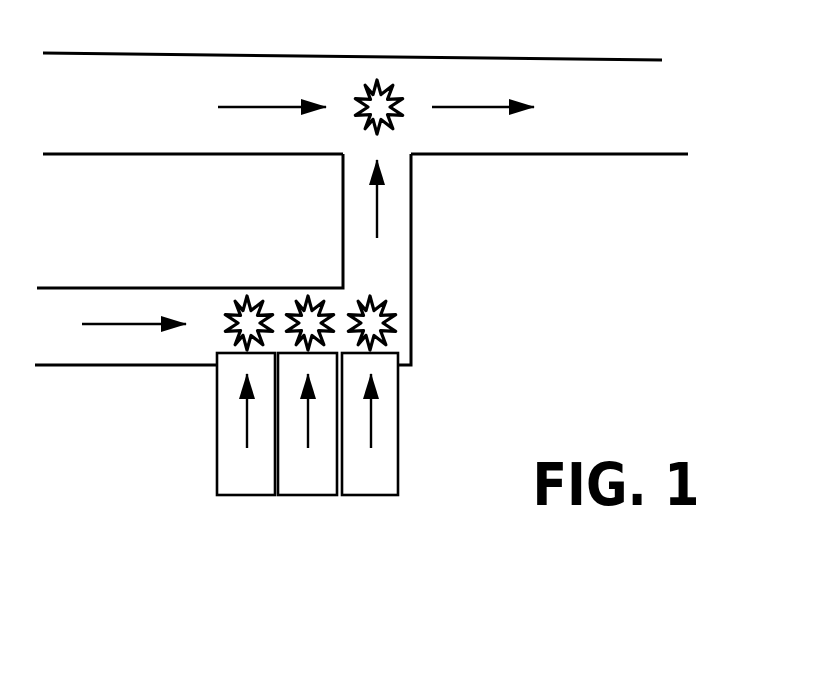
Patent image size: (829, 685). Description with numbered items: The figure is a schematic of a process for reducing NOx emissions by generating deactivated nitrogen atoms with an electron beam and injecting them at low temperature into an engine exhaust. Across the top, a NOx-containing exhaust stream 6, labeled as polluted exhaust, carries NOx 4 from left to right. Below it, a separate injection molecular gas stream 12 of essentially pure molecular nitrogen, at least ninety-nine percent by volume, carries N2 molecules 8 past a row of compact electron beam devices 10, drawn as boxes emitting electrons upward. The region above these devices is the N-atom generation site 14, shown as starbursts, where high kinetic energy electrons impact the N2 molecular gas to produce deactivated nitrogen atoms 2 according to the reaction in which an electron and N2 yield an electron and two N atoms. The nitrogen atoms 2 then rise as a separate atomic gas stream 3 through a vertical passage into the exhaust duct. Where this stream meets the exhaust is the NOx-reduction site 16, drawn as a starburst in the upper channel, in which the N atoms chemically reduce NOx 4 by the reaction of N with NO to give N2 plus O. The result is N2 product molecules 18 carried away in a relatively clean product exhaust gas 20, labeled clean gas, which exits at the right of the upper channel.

The deactivated nitrogen atoms 2 is at (390, 250).
The separate atomic gas stream 3 is at (382, 210).
The NOx 4 is at (183, 97).
The NOx-containing exhaust stream 6 is at (80, 82).
The N2 molecules 8 is at (57, 315).
The compact electron beam devices 10 is at (383, 457).
The separate injection molecular gas stream 12 is at (140, 323).
The N-atom generation site 14 is at (303, 296).
The NOx-reduction site 16 is at (408, 97).
The N2 product molecules 18 is at (562, 132).
The clean product exhaust gas 20 is at (665, 85).